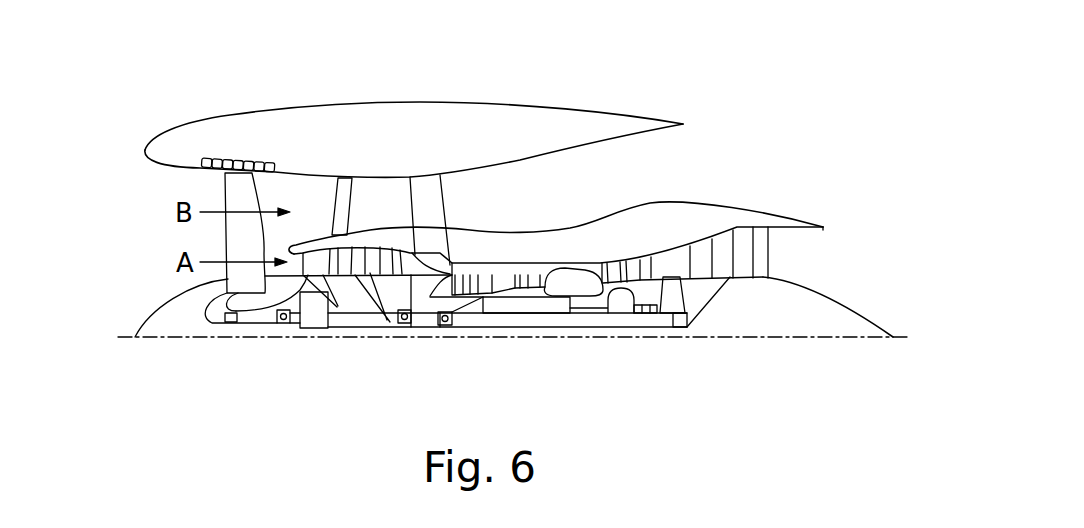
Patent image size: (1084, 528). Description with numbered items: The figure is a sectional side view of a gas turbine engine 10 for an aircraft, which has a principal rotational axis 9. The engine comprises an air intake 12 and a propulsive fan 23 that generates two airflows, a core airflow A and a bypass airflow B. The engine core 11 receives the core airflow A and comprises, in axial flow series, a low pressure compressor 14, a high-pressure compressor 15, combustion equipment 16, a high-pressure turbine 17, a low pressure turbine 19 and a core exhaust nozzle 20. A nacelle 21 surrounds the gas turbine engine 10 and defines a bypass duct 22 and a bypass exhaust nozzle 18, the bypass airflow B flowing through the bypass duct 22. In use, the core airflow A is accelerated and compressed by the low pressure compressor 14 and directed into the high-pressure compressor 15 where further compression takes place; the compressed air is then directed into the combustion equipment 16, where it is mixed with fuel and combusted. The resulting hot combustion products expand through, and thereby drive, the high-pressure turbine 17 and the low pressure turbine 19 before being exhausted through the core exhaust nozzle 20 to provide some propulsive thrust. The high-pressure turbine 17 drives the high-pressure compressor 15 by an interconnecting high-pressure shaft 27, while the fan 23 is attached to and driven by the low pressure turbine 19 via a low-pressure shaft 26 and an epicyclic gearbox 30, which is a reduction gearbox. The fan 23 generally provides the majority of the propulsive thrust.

The principal rotational axis 9 is at (793, 340).
The gas turbine engine 10 is at (497, 93).
The core 11 is at (615, 281).
The air intake 12 is at (166, 215).
The low pressure compressor 14 is at (373, 262).
The high-pressure compressor 15 is at (500, 283).
The combustion equipment 16 is at (567, 283).
The high-pressure turbine 17 is at (623, 268).
The bypass exhaust nozzle 18 is at (786, 118).
The low pressure turbine 19 is at (745, 268).
The core exhaust nozzle 20 is at (838, 262).
The nacelle 21 is at (425, 110).
The bypass duct 22 is at (630, 161).
The propulsive fan 23 is at (228, 248).
The shaft 26 is at (472, 327).
The interconnecting shaft 27 is at (528, 318).
The epicyclic gearbox 30 is at (313, 318).